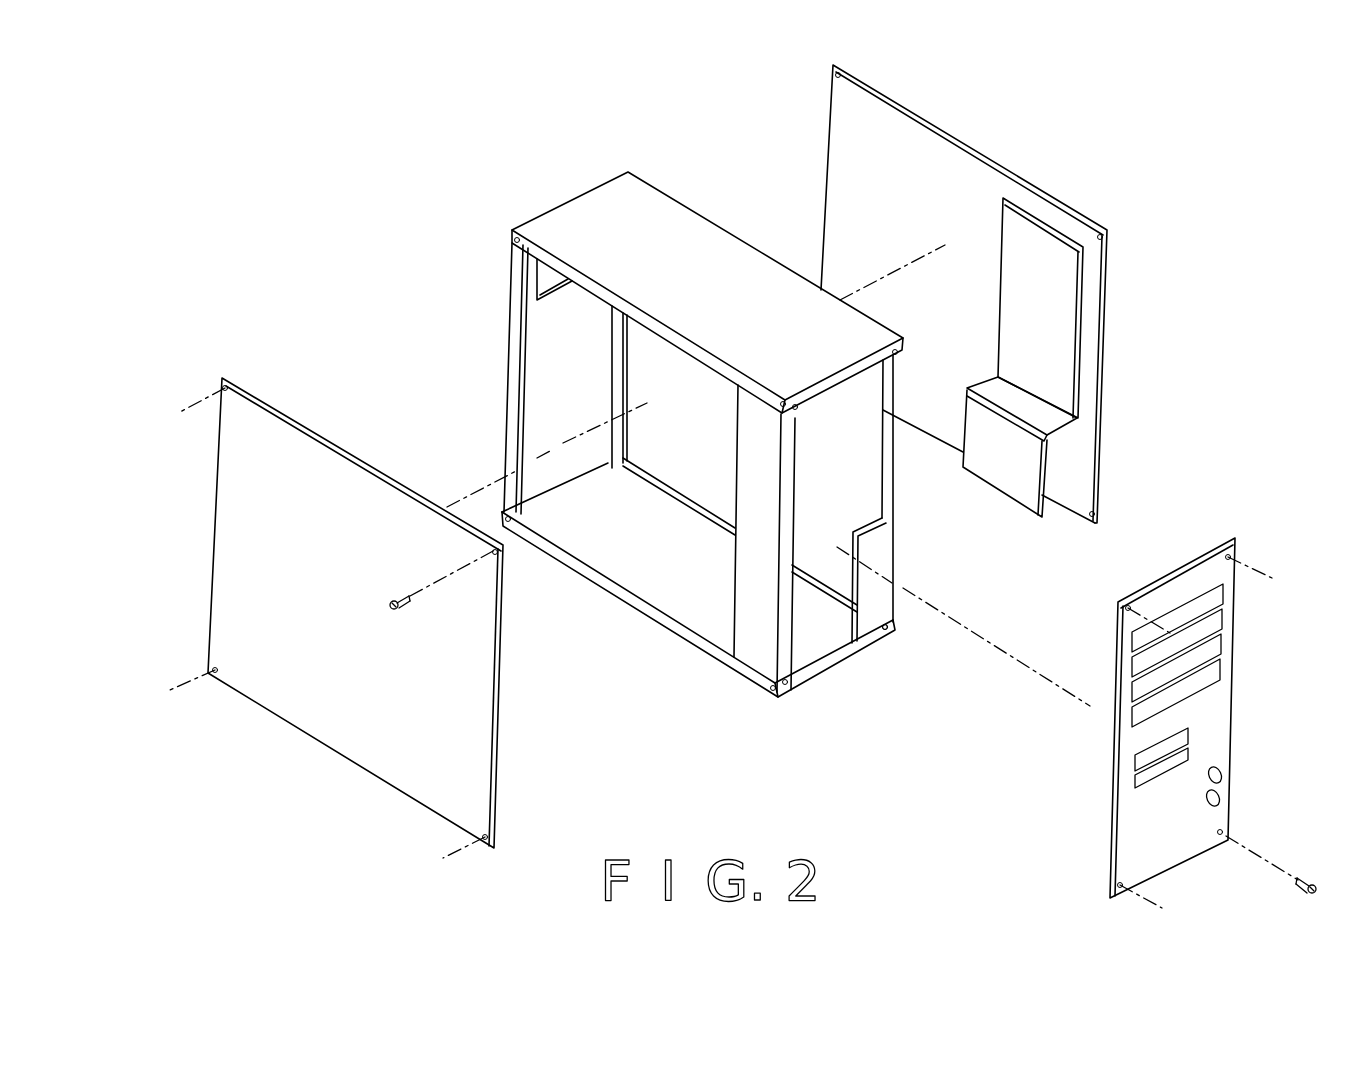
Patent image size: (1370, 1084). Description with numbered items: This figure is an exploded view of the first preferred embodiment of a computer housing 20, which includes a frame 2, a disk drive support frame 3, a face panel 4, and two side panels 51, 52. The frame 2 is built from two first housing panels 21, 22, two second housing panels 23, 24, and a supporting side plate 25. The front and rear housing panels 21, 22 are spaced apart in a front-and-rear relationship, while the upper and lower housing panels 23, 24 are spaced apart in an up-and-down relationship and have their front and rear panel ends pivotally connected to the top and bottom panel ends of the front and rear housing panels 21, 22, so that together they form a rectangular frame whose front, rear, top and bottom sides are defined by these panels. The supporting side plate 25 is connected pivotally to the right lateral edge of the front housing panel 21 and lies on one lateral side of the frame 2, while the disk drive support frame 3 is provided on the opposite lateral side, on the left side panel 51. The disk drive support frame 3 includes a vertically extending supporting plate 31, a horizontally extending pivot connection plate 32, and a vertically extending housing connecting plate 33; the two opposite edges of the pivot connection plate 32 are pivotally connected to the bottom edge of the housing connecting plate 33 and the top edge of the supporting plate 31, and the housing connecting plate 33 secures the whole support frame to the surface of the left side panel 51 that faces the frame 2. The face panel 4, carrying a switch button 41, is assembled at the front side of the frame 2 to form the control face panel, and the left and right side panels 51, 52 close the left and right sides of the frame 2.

The frame 2 is at (685, 408).
The computer housing 20 is at (1158, 542).
The front housing panel 21 is at (878, 547).
The rear housing panel 22 is at (547, 333).
The upper housing panel 23 is at (593, 207).
The lower housing panel 24 is at (662, 580).
The supporting side plate 25 is at (762, 635).
The disk drive support frame 3 is at (1070, 413).
The supporting plate 31 is at (1012, 483).
The pivot connection plate 32 is at (1048, 418).
The housing connecting plate 33 is at (1073, 360).
The face panel 4 is at (1166, 718).
The switch button 41 is at (1217, 803).
The left side panel 51 is at (913, 122).
The right side panel 52 is at (290, 415).